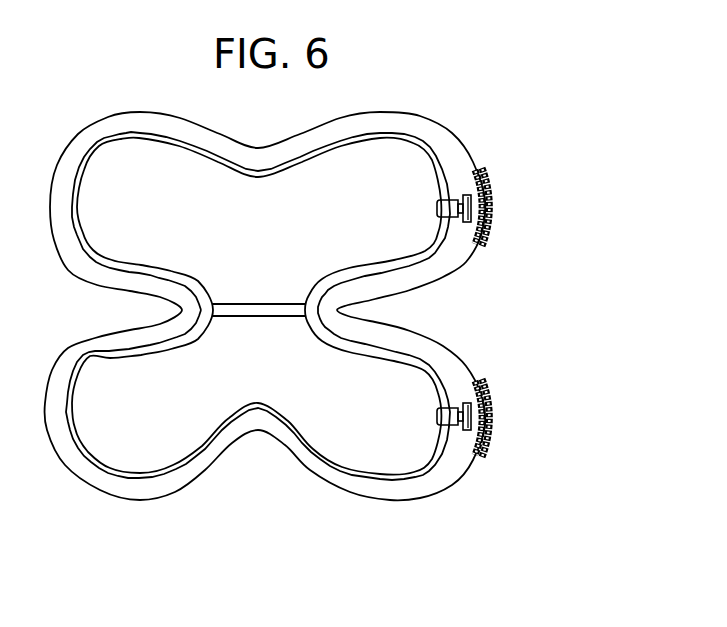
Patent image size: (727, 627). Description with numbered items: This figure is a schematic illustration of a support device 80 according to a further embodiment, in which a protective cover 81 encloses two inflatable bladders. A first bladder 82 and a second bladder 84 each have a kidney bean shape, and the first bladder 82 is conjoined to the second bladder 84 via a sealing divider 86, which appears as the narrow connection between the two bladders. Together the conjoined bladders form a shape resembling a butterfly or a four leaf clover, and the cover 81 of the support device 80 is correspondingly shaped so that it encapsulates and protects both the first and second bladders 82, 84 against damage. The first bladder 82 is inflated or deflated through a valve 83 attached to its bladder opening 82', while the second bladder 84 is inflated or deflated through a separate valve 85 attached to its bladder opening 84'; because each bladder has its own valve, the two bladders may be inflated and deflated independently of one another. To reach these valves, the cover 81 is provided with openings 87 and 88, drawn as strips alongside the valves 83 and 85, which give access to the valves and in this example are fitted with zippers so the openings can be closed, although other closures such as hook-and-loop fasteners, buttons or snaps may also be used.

The support device 80 is at (485, 142).
The protective cover 81 is at (427, 114).
The first bladder 82 is at (261, 221).
The bladder opening 82' is at (473, 250).
The valve 83 is at (472, 192).
The second bladder 84 is at (258, 395).
The bladder opening 84' is at (447, 479).
The valve 85 is at (467, 430).
The sealing divider 86 is at (247, 303).
The opening 87 is at (493, 236).
The opening 88 is at (493, 397).